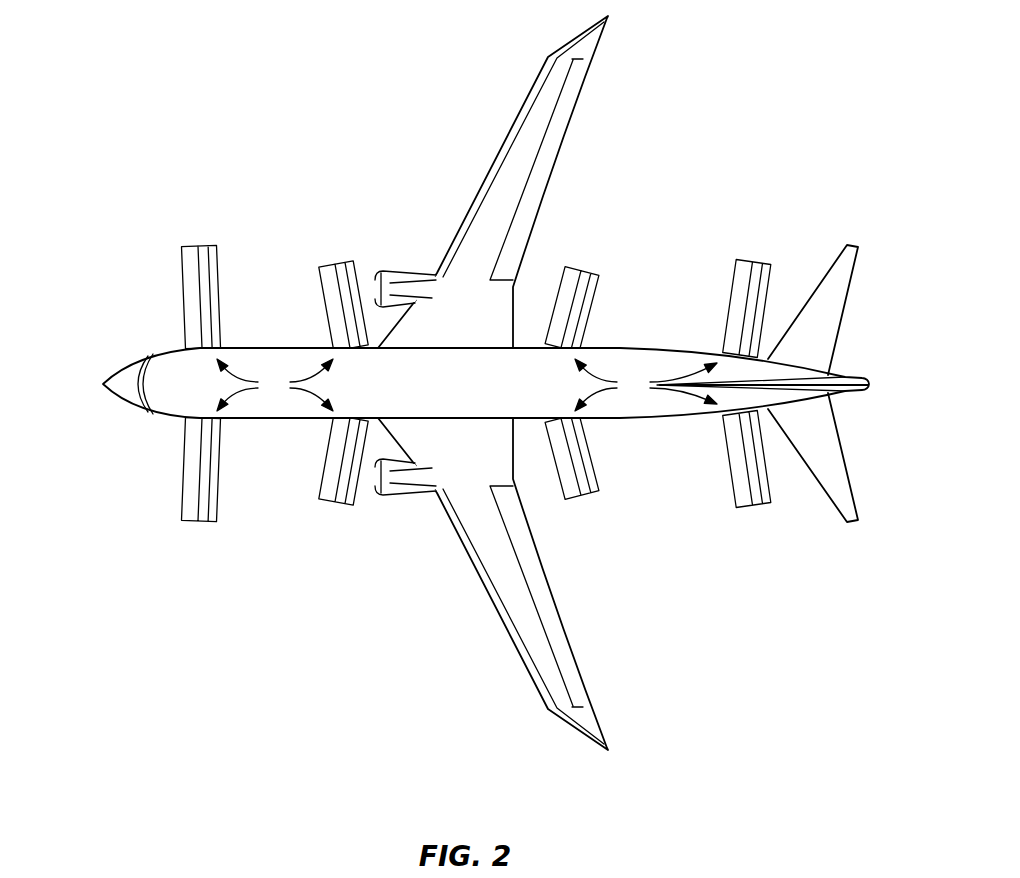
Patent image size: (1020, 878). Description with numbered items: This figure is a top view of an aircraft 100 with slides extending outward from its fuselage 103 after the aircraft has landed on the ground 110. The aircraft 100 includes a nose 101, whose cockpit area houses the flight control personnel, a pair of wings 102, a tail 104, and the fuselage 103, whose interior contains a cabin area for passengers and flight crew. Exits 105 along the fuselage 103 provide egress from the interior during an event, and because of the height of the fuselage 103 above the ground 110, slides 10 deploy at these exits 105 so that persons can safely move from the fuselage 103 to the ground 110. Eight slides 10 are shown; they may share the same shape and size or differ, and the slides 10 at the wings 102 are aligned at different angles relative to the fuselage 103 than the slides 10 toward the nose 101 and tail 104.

The aircraft 100 is at (693, 210).
The nose 101 is at (118, 383).
The wings 102 is at (535, 186).
The fuselage 103 is at (628, 367).
The tail 104 is at (860, 377).
The exits 105 is at (467, 385).
The slides 10 is at (200, 277).
The ground 110 is at (249, 617).